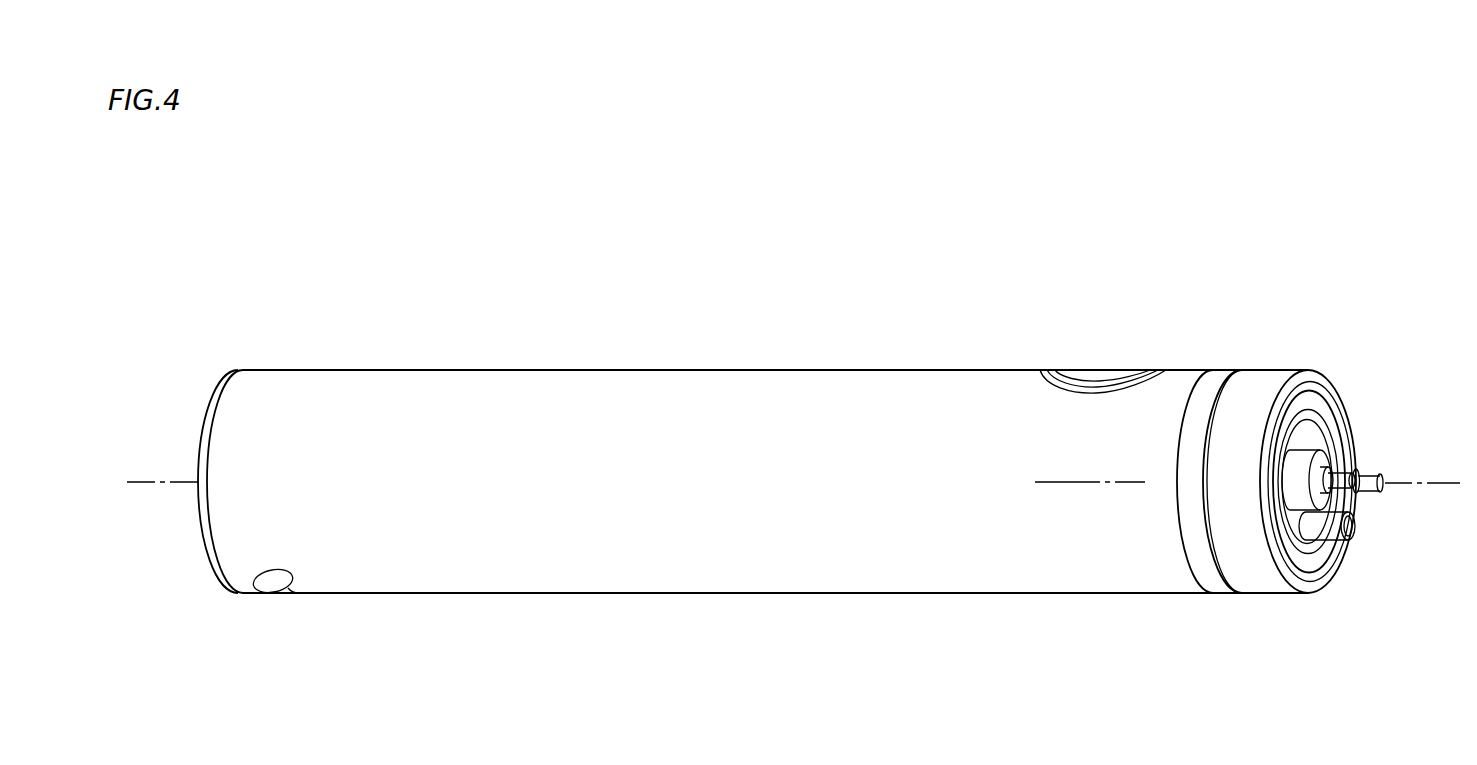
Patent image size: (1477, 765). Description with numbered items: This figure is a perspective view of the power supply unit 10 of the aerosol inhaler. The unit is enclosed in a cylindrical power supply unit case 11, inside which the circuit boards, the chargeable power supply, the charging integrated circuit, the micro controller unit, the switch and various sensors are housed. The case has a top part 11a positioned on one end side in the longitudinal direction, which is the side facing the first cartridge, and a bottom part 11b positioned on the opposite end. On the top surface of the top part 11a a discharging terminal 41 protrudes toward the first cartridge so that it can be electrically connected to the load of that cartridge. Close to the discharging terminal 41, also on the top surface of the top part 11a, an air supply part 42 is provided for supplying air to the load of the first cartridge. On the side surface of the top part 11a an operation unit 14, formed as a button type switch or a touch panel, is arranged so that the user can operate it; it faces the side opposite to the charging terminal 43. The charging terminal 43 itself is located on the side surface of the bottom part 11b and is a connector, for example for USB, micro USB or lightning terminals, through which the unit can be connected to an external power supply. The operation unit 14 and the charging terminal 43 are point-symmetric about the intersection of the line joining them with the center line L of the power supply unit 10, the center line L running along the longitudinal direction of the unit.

The power supply unit 10 is at (986, 282).
The power supply unit case 11 is at (661, 370).
The top part 11a is at (1157, 553).
The bottom part 11b is at (313, 440).
The operation unit 14 is at (1100, 370).
The discharging terminal 41 is at (1360, 478).
The air supply part 42 is at (1343, 550).
The charging terminal 43 is at (276, 578).
The center line L is at (1436, 487).